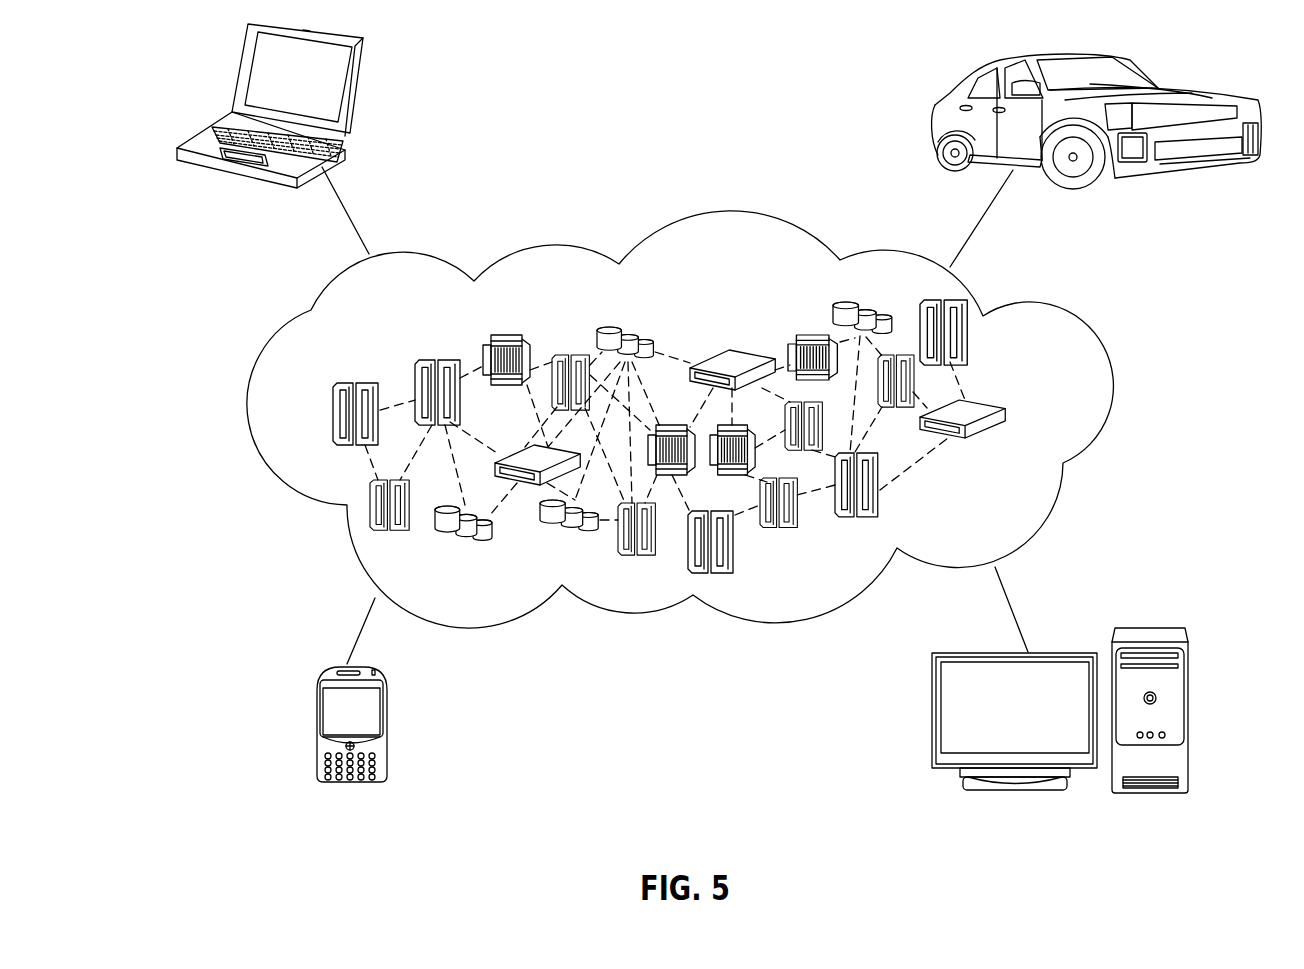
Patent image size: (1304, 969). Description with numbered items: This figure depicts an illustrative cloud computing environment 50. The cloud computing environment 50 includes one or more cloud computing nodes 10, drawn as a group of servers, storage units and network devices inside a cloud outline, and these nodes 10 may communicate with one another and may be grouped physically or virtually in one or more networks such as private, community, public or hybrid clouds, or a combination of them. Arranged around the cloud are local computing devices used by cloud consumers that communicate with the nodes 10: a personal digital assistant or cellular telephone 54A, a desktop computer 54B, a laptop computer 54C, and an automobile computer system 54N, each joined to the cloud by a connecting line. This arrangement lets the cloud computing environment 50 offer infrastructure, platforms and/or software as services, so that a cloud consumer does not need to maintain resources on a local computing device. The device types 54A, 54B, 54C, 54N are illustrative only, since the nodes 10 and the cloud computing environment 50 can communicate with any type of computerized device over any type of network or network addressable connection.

The cloud computing nodes 10 is at (1046, 414).
The cloud computing environment 50 is at (1077, 325).
The personal digital assistant (PDA) or cellular telephone 54A is at (320, 728).
The desktop computer 54B is at (1153, 628).
The laptop computer 54C is at (357, 92).
The automobile computer system 54N is at (940, 102).